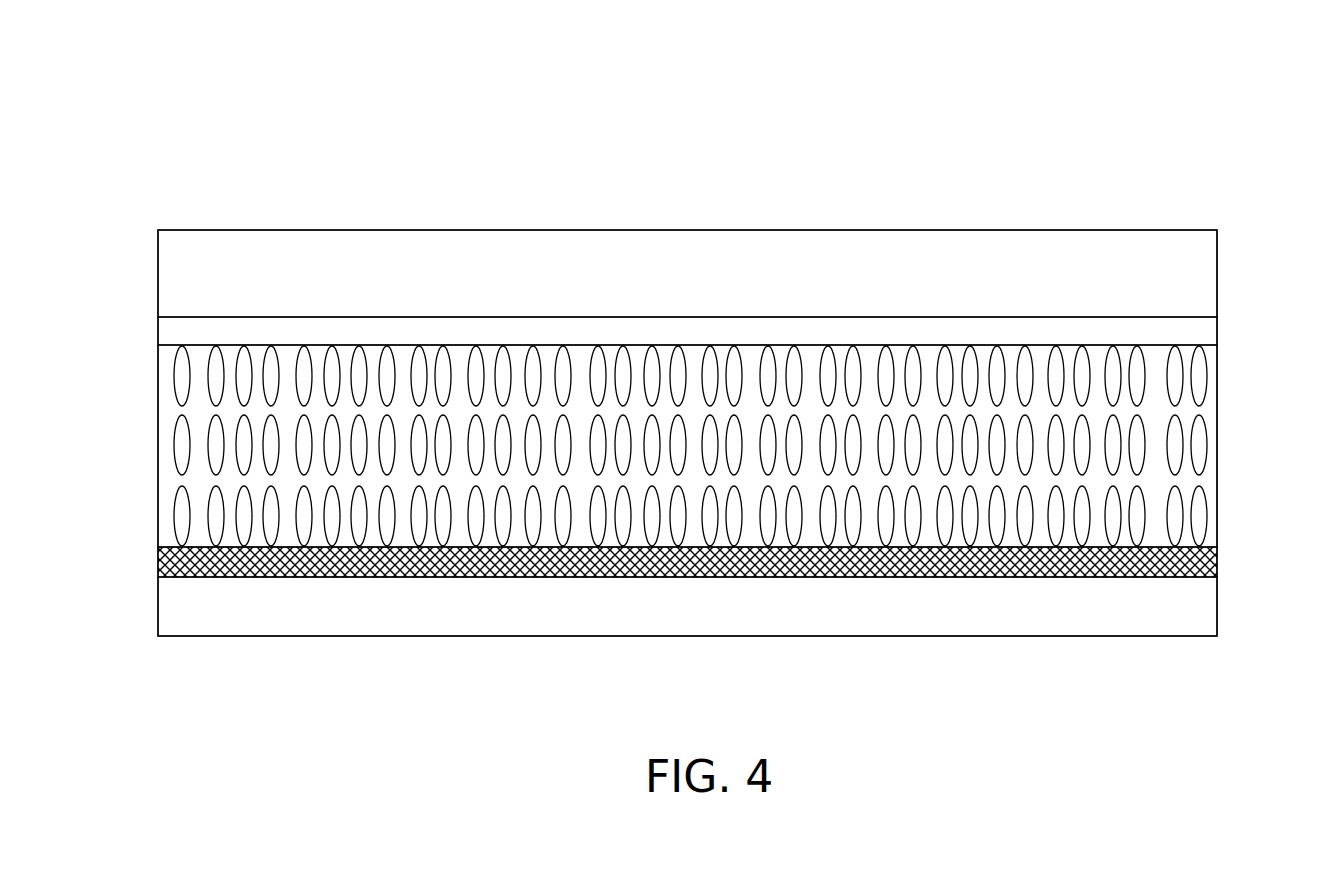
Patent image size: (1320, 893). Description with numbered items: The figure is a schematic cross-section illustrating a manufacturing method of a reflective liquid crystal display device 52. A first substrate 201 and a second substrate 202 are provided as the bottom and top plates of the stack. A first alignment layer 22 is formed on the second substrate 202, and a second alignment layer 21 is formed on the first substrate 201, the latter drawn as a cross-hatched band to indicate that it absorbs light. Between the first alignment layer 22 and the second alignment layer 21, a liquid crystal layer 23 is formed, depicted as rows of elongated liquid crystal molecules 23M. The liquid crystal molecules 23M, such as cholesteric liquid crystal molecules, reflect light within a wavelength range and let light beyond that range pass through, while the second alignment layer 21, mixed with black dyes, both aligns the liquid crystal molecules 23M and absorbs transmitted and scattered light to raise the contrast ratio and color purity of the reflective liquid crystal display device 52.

The reflective liquid crystal display device 52 is at (1143, 148).
The second substrate 202 is at (1205, 276).
The first alignment layer 22 is at (1205, 332).
The liquid crystal layer 23 is at (1227, 345).
The liquid crystal molecules 23M is at (185, 447).
The second alignment layer 21 is at (1218, 562).
The first substrate 201 is at (1203, 622).